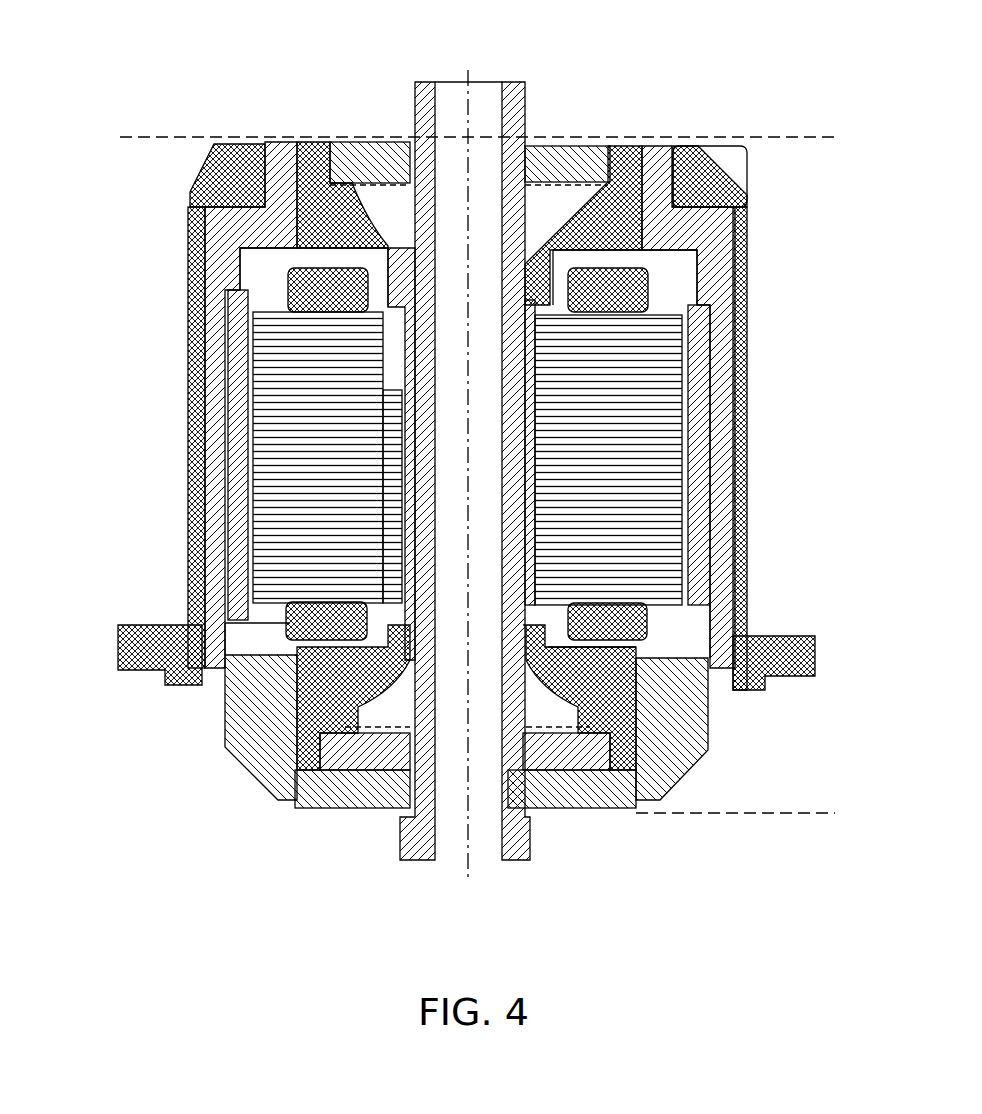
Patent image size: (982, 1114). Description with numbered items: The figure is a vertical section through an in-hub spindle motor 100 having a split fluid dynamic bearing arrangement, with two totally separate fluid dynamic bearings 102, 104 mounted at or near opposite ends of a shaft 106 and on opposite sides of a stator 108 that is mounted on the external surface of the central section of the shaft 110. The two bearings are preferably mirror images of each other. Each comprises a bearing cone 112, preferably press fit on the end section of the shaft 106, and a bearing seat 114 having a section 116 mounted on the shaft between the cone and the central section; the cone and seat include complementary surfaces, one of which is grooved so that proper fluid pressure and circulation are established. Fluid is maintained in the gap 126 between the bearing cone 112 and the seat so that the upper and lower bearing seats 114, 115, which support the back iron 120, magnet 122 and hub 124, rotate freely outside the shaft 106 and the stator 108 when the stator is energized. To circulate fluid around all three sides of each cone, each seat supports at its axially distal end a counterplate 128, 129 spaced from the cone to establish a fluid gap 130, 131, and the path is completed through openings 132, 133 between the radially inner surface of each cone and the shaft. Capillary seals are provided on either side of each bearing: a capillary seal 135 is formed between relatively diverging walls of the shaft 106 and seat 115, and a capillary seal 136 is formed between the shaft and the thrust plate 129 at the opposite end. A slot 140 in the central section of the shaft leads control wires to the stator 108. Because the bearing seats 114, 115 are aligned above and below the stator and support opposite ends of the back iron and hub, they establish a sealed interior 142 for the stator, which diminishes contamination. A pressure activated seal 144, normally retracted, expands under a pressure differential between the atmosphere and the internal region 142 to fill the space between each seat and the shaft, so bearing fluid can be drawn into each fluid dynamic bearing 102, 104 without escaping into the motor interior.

The spindle motor 100 is at (231, 118).
The fluid dynamic bearing 102 is at (373, 195).
The fluid dynamic bearing 104 is at (395, 712).
The shaft 106 is at (517, 100).
The stator 108 is at (550, 455).
The central section of the shaft 110 is at (535, 557).
The bearing cone 112 is at (388, 807).
The bearing seat 114 is at (297, 807).
The bearing seat 115 is at (310, 145).
The section of the bearing seat 116 is at (607, 602).
The back iron 120 is at (702, 168).
The magnet 122 is at (702, 318).
The hub 124 is at (748, 250).
The gap 126 is at (365, 216).
The counterplate 128 is at (590, 760).
The counterplate 129 is at (580, 160).
The fluid gap 130 is at (555, 770).
The fluid gap 131 is at (396, 158).
The opening 132 is at (520, 730).
The opening 133 is at (657, 175).
The capillary seal 135 is at (640, 240).
The capillary seal 136 is at (649, 333).
The slot 140 is at (392, 371).
The sealed interior 142 is at (687, 642).
The pressure activated seal 144 is at (558, 317).